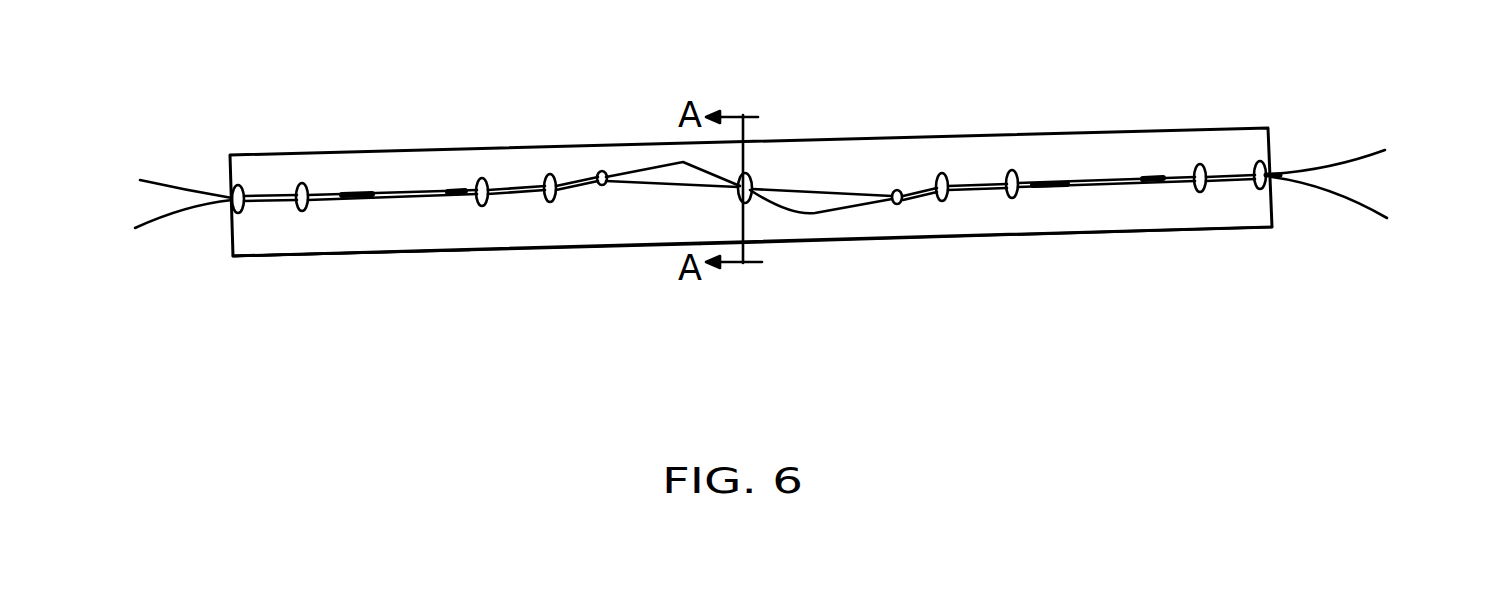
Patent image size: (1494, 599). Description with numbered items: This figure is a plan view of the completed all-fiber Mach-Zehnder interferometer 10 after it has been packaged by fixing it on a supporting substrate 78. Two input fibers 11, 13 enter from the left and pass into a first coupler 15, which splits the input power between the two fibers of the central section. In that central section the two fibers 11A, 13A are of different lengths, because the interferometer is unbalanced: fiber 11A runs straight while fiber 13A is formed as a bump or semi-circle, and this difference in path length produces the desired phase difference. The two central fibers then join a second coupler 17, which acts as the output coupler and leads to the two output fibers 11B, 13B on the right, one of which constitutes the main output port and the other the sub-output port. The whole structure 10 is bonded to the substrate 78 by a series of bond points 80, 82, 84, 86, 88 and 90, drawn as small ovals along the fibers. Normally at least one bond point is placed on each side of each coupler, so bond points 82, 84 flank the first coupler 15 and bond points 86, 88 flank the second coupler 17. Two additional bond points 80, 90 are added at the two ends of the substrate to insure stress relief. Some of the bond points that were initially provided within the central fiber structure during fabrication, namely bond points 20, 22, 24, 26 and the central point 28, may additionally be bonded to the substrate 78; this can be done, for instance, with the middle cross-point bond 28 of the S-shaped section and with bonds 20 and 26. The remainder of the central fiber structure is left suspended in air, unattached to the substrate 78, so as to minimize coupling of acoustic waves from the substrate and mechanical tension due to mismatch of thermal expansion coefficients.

The all-fiber Mach-Zehnder interferometer 10 is at (812, 112).
The input fiber 11 is at (157, 222).
The input fiber 13 is at (158, 182).
The fiber 11A is at (693, 187).
The fiber 13A is at (670, 163).
The output fiber 11B is at (1352, 200).
The output fiber 13B is at (1367, 157).
The first coupler 15 is at (413, 198).
The second coupler 17 is at (1108, 185).
The bond point 20 is at (549, 174).
The bond point 22 is at (605, 185).
The bond point 24 is at (897, 190).
The bond point 26 is at (942, 173).
The central point 28 is at (751, 200).
The substrate 78 is at (508, 232).
The bond point 80 is at (243, 184).
The bond point 82 is at (301, 183).
The bond point 84 is at (483, 178).
The bond point 86 is at (1013, 170).
The bond point 88 is at (1207, 163).
The bond point 90 is at (1257, 160).